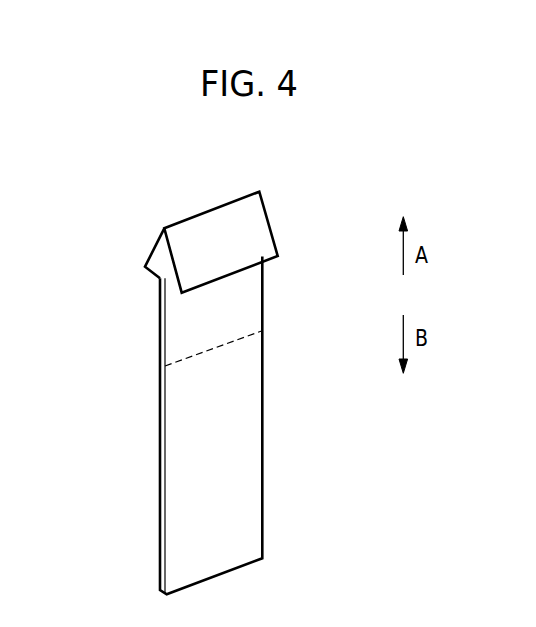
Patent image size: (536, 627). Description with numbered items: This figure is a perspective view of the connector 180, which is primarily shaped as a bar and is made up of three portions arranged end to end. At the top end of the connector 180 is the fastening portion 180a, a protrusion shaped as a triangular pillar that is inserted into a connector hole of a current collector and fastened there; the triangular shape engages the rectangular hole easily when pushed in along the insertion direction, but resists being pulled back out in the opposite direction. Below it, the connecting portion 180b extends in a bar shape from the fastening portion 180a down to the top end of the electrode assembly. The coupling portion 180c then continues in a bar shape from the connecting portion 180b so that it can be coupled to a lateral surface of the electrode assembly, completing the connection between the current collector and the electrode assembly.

The connector 180 is at (128, 218).
The fastening portion 180a is at (260, 235).
The connecting portion 180b is at (252, 307).
The coupling portion 180c is at (252, 417).